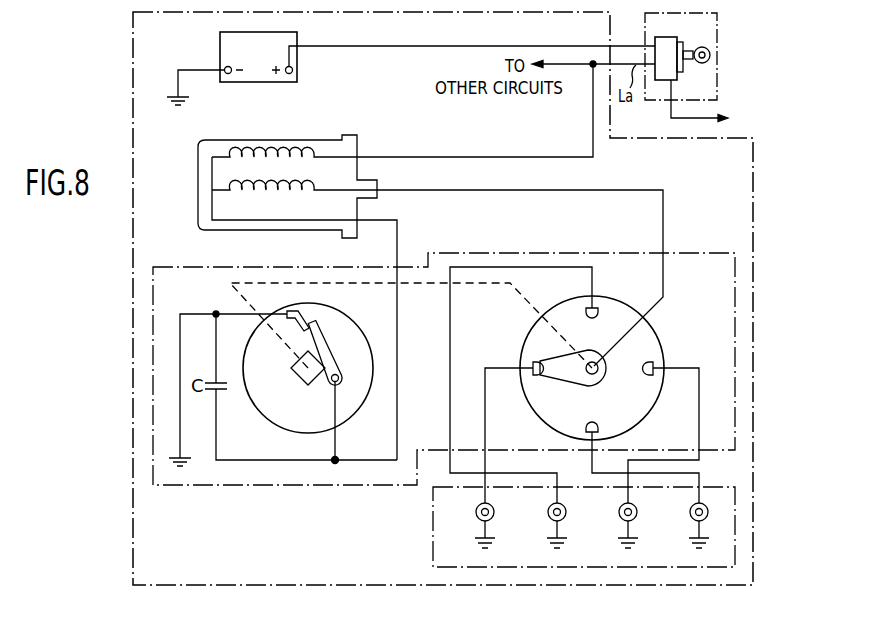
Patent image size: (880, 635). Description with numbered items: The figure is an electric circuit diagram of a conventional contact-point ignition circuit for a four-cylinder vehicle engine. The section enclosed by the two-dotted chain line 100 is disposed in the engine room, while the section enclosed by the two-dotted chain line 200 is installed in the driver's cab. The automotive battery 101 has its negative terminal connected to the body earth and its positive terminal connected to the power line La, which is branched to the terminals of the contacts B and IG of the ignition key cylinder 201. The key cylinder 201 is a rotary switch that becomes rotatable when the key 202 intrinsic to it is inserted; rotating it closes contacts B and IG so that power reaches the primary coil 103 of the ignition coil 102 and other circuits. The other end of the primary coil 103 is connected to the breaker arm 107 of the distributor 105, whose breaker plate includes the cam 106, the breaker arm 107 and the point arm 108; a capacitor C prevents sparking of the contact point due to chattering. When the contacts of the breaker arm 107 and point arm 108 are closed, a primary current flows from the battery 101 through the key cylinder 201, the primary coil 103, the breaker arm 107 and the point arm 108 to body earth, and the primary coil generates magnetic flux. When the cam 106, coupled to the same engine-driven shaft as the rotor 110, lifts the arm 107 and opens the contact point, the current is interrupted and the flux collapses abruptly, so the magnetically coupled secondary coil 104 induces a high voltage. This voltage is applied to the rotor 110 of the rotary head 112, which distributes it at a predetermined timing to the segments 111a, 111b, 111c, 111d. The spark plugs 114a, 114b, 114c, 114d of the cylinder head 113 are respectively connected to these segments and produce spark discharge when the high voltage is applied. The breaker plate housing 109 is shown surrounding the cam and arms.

The two-dotted chain line 100 is at (580, 12).
The automotive battery 101 is at (219, 38).
The ignition coil 102 is at (198, 178).
The primary coil 103 is at (275, 152).
The secondary coil 104 is at (285, 195).
The distributor 105 is at (306, 486).
The cam 106 is at (306, 383).
The breaker arm 107 is at (340, 360).
The point arm 108 is at (293, 313).
The breaker housing 109 is at (273, 427).
The rotor 110 is at (600, 375).
The segment 111a is at (531, 375).
The segment 111b is at (597, 308).
The segment 111c is at (655, 363).
The segment 111d is at (589, 425).
The rotary head 112 is at (660, 332).
The cylinder head 113 is at (433, 525).
The spark plug 114a is at (494, 514).
The spark plug 114b is at (566, 514).
The spark plug 114c is at (634, 518).
The spark plug 114d is at (691, 510).
The two-dotted chain line 200 is at (675, 12).
The ignition key cylinder 201 is at (674, 36).
The key 202 is at (710, 53).